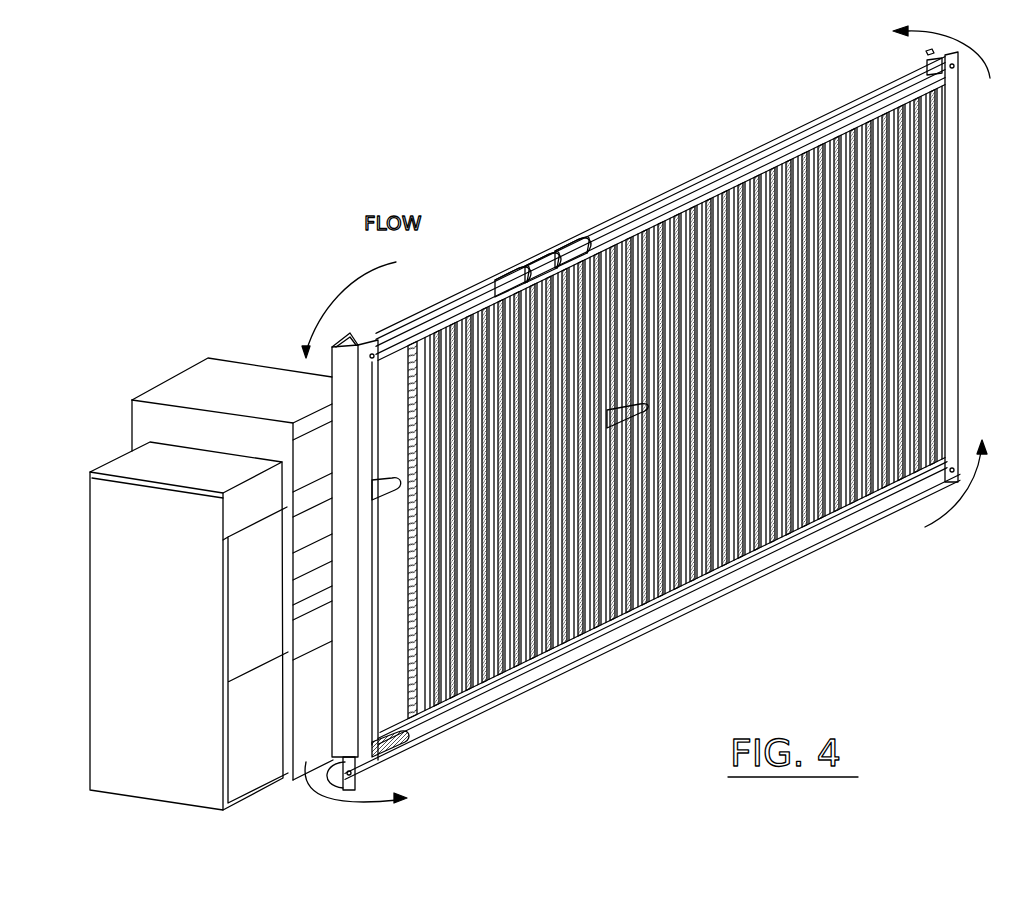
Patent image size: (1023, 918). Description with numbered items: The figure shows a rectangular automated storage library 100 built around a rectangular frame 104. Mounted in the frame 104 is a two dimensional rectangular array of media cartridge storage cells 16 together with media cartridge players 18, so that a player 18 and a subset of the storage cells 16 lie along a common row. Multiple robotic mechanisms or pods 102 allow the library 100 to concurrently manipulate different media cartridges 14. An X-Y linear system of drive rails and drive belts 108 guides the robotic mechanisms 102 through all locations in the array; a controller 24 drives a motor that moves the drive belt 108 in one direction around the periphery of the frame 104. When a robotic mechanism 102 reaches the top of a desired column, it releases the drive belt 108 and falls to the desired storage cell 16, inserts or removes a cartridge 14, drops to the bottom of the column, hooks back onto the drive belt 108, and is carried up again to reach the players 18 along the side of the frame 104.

The rectangular automated storage library 100 is at (576, 80).
The drive rails and drive belts 108 is at (801, 114).
The rectangular frame 104 is at (817, 556).
The media cartridge storage cells 16 is at (755, 200).
The media cartridges 14 is at (737, 458).
The robotic mechanisms or pods 102 is at (564, 238).
The media cartridge players 18 is at (186, 362).
The controller 24 is at (84, 477).